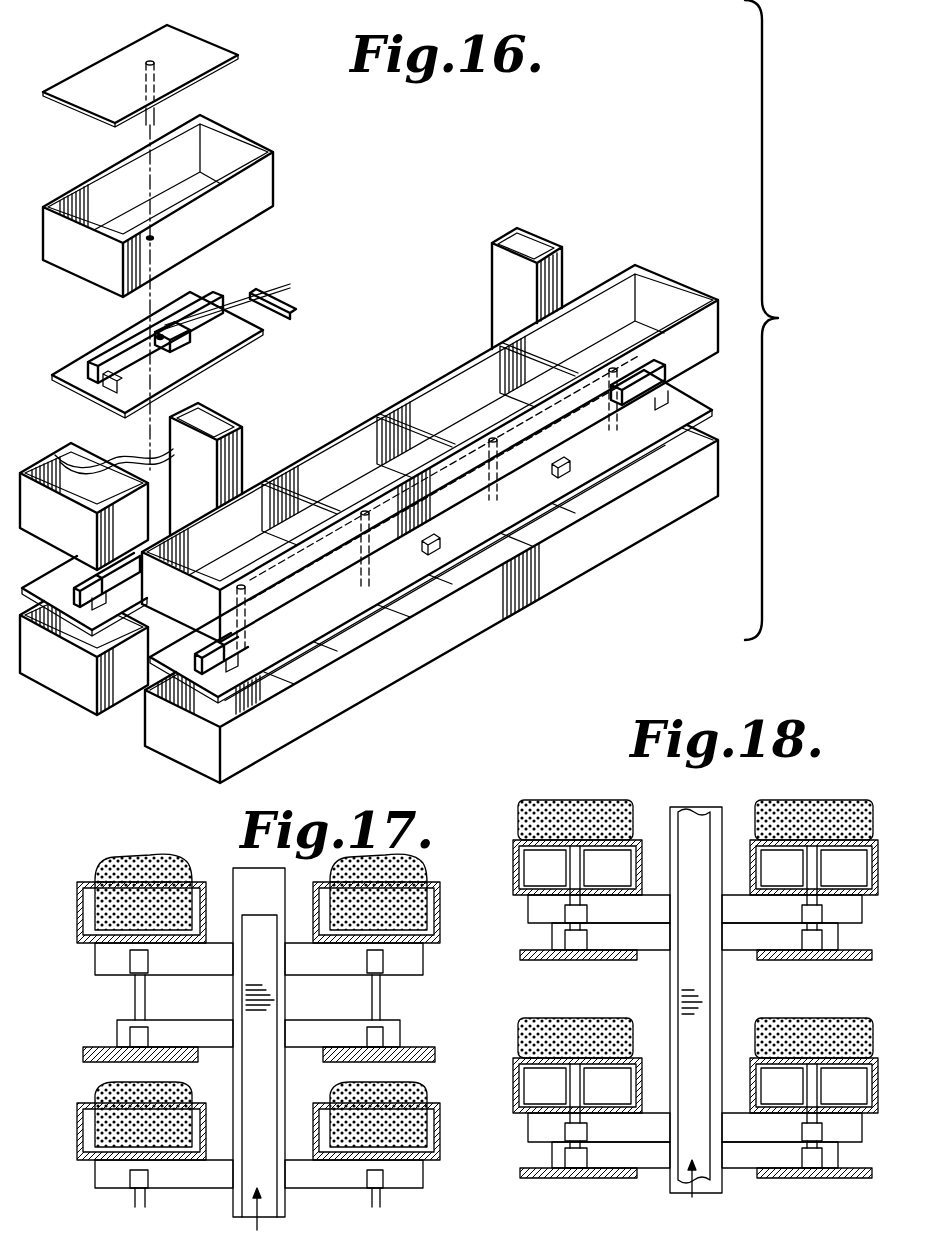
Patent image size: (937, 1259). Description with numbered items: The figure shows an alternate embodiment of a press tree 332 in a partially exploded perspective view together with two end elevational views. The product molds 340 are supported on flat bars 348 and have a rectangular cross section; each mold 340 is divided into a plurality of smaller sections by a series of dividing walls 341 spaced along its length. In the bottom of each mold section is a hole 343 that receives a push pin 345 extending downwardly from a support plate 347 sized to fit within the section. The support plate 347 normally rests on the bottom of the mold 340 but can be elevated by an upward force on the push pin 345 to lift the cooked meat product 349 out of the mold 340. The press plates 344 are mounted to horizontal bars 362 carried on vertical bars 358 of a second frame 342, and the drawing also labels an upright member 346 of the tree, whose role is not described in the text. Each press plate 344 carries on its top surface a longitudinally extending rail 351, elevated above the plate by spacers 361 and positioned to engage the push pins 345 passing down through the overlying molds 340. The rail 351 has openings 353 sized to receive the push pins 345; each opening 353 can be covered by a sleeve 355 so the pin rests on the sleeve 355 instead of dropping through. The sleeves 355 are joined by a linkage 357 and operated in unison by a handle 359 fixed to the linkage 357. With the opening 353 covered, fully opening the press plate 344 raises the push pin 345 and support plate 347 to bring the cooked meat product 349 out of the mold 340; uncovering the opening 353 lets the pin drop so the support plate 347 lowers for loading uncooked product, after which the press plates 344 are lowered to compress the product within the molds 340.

In FIG. 16, the press tree 332 is at (372, 236).
In FIG. 17, the press tree 332 is at (65, 860).
In FIG. 18, the press tree 332 is at (578, 764).
In FIG. 16, the product mold 340 is at (268, 186).
In FIG. 17, the product mold 340 is at (208, 884).
In FIG. 18, the product mold 340 is at (513, 846).
In FIG. 16, the dividing wall 341 is at (207, 165).
In FIG. 17, the second frame 342 is at (244, 1082).
In FIG. 18, the second frame 342 is at (690, 1192).
In FIG. 16, the hole 343 is at (153, 237).
In FIG. 16, the press plate 344 is at (78, 372).
In FIG. 17, the press plate 344 is at (88, 1058).
In FIG. 18, the press plate 344 is at (560, 962).
In FIG. 16, the push pin 345 is at (146, 120).
In FIG. 17, the push pin 345 is at (145, 997).
In FIG. 18, the push pin 345 is at (580, 880).
In FIG. 16, the sleeve post 346 is at (240, 446).
In FIG. 17, the sleeve post 346 is at (275, 905).
In FIG. 18, the sleeve post 346 is at (672, 810).
In FIG. 16, the support plate 347 is at (208, 48).
In FIG. 17, the support plate 347 is at (147, 1146).
In FIG. 18, the support plate 347 is at (565, 850).
In FIG. 16, the flat bar 348 is at (431, 536).
In FIG. 17, the flat bar 348 is at (97, 960).
In FIG. 18, the flat bar 348 is at (695, 1018).
In FIG. 17, the meat product 349 is at (140, 858).
In FIG. 18, the meat product 349 is at (588, 800).
In FIG. 16, the rail 351 is at (102, 360).
In FIG. 18, the rail 351 is at (588, 940).
In FIG. 16, the opening 353 is at (157, 330).
In FIG. 16, the sleeve 355 is at (165, 333).
In FIG. 16, the linkage 357 is at (278, 278).
In FIG. 18, the vertical bar 358 is at (690, 822).
In FIG. 16, the handle 359 is at (286, 306).
In FIG. 16, the spacer 361 is at (118, 385).
In FIG. 17, the horizontal bar 362 is at (402, 1032).
In FIG. 18, the horizontal bar 362 is at (650, 948).